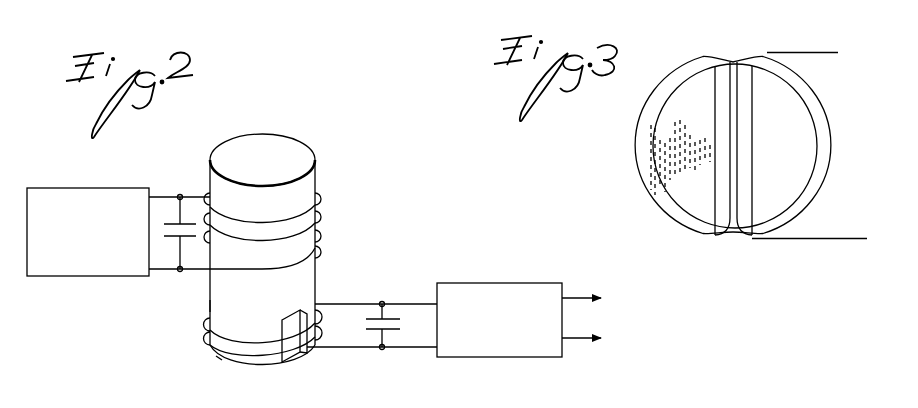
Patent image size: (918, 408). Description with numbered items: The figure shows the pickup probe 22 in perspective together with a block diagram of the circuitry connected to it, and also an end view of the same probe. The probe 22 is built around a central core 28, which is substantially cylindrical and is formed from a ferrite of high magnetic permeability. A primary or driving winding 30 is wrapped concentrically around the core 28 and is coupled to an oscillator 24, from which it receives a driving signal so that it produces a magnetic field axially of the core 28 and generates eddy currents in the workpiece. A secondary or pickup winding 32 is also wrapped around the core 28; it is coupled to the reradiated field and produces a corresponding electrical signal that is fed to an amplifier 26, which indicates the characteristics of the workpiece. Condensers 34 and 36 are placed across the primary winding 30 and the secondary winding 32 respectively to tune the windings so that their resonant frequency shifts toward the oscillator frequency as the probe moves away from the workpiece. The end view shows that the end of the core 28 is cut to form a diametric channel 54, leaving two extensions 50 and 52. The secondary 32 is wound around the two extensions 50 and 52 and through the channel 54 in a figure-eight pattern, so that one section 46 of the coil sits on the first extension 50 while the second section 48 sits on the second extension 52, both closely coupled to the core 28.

In FIG. 2, the pickup probe 22 is at (158, 300).
In FIG. 2, the oscillator 24 is at (92, 190).
In FIG. 2, the amplifier 26 is at (519, 285).
In FIG. 2, the central core 28 is at (302, 138).
In FIG. 3, the central core 28 is at (800, 87).
In FIG. 2, the primary winding 30 is at (320, 197).
In FIG. 2, the secondary winding 32 is at (207, 321).
In FIG. 3, the secondary winding 32 is at (642, 194).
In FIG. 2, the condenser 34 is at (168, 220).
In FIG. 2, the condenser 36 is at (386, 303).
In FIG. 2, the first section of secondary coil 46 is at (224, 350).
In FIG. 3, the first section of secondary coil 46 is at (681, 60).
In FIG. 2, the second section of secondary coil 48 is at (323, 315).
In FIG. 3, the second section of secondary coil 48 is at (828, 194).
In FIG. 2, the first extension 50 is at (250, 358).
In FIG. 3, the first extension 50 is at (692, 124).
In FIG. 3, the second extension 52 is at (800, 138).
In FIG. 2, the diametric channel 54 is at (297, 316).
In FIG. 3, the diametric channel 54 is at (733, 236).